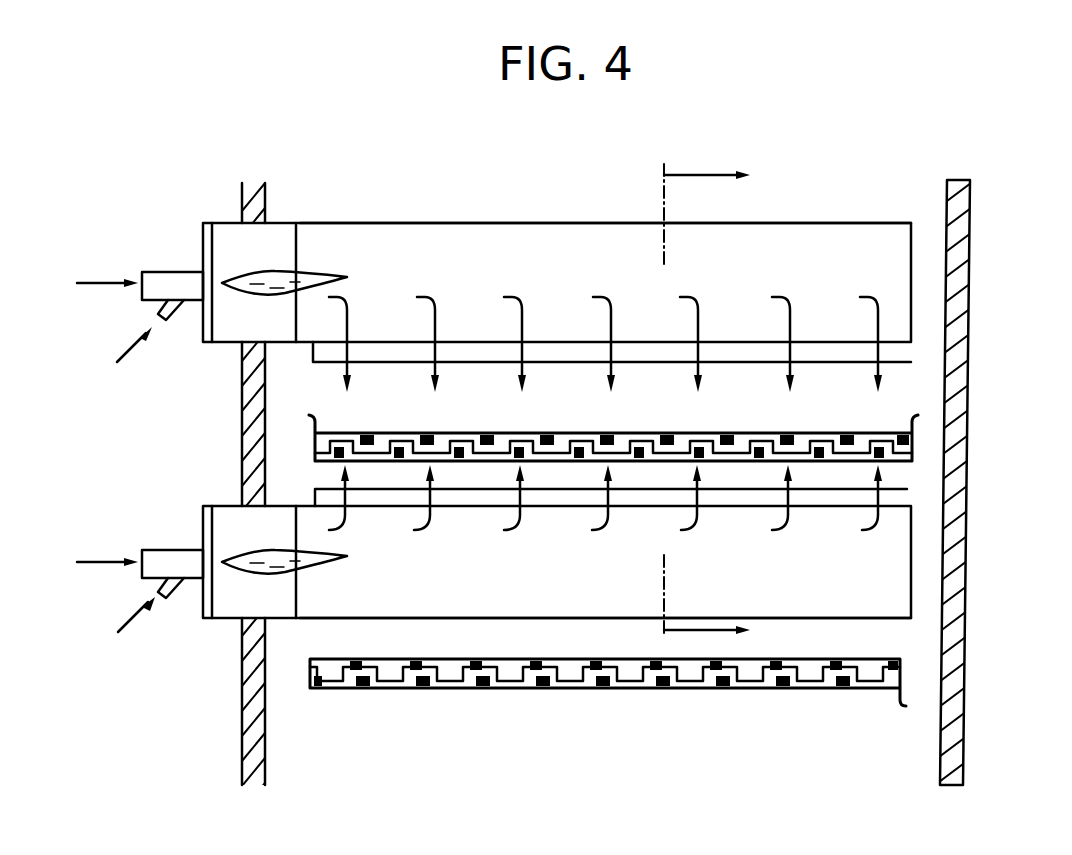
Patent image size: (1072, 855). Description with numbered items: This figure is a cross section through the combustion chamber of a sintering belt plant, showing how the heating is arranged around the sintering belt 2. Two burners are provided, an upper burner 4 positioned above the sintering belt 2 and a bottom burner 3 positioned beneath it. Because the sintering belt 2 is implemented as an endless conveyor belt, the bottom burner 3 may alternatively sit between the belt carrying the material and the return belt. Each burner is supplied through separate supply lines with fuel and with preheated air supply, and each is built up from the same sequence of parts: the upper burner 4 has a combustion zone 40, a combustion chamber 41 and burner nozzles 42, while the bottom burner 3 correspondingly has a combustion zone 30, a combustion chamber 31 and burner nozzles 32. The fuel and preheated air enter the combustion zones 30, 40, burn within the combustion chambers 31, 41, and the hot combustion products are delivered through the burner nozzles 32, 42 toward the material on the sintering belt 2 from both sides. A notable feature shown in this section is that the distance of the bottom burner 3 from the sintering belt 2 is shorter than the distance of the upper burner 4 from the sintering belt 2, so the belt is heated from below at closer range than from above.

The sintering belt 2 is at (633, 445).
The bottom burner 3 is at (534, 606).
The burner 4 is at (546, 278).
The combustion zone 30 is at (223, 605).
The combustion chamber 31 is at (505, 597).
The burner nozzles 32 is at (902, 498).
The combustion zone 40 is at (212, 236).
The combustion chamber 41 is at (555, 240).
The burner nozzles 42 is at (903, 352).